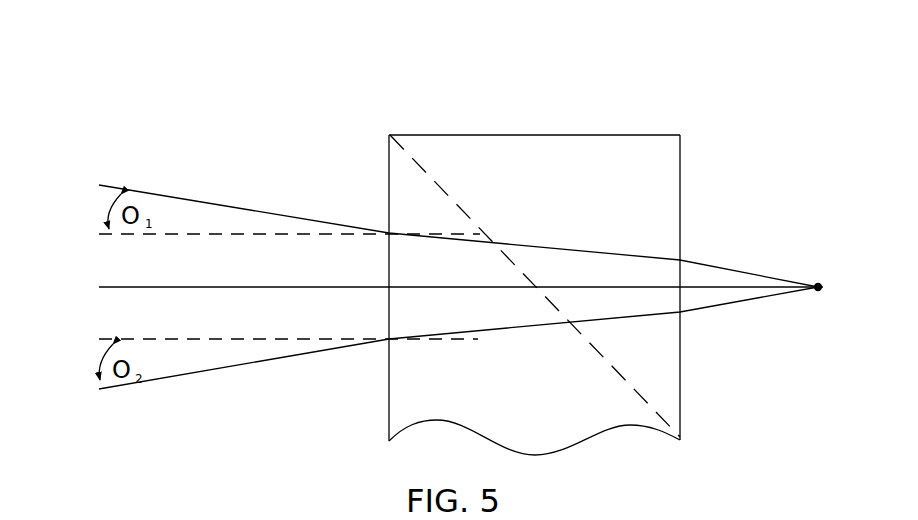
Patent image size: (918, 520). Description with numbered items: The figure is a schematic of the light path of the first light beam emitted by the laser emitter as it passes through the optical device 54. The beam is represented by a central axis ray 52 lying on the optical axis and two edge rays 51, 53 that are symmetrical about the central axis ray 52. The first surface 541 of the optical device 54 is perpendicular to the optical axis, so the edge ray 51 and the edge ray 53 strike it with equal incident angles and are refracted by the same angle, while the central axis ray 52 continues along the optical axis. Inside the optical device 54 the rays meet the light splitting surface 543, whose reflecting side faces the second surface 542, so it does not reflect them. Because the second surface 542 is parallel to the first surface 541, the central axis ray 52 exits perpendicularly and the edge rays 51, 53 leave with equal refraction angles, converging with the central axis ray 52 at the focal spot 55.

The edge ray 51 is at (152, 191).
The central axis ray 52 is at (228, 286).
The edge ray 53 is at (293, 350).
The optical device 54 is at (545, 250).
The first surface 541 is at (389, 221).
The second surface 542 is at (682, 211).
The light splitting surface 543 is at (624, 380).
The focal spot 55 is at (817, 283).